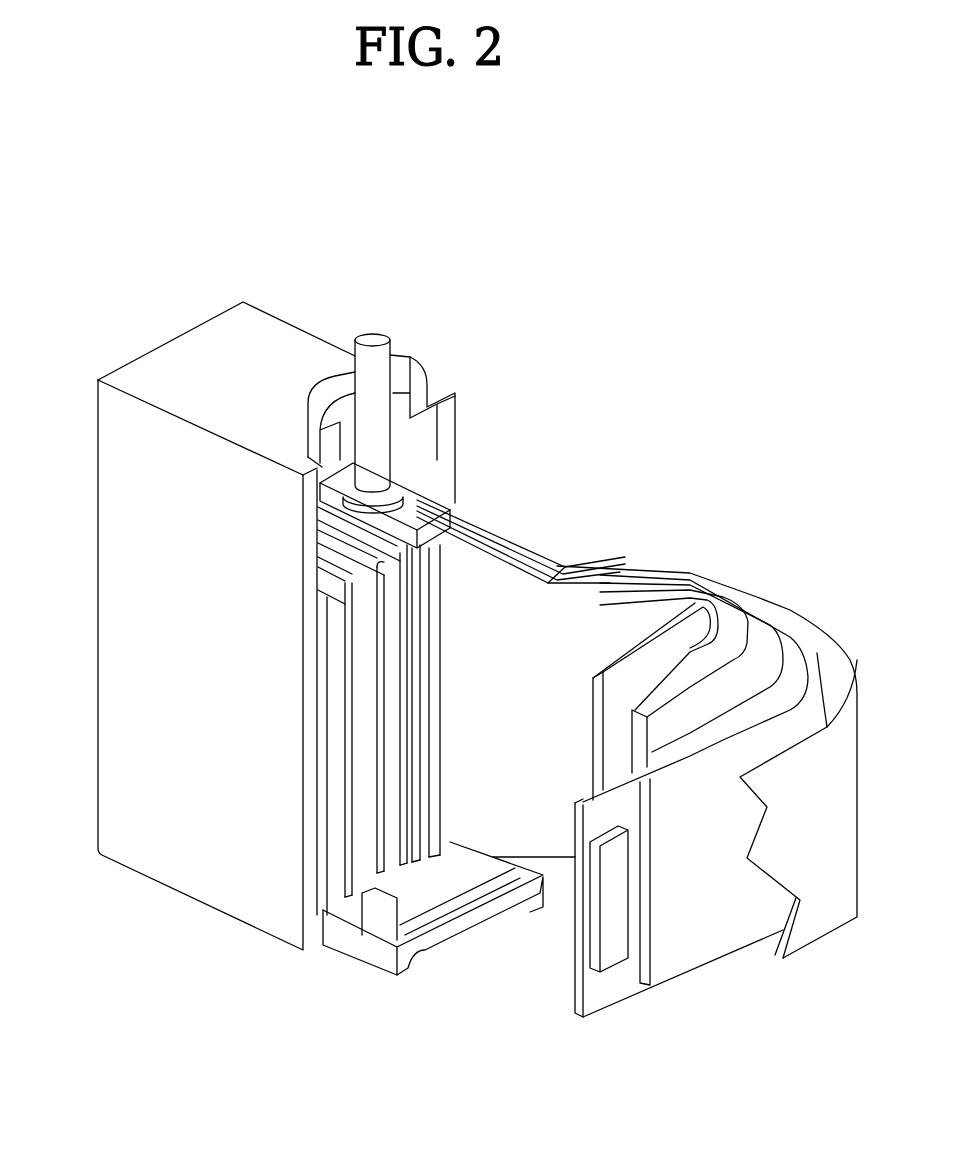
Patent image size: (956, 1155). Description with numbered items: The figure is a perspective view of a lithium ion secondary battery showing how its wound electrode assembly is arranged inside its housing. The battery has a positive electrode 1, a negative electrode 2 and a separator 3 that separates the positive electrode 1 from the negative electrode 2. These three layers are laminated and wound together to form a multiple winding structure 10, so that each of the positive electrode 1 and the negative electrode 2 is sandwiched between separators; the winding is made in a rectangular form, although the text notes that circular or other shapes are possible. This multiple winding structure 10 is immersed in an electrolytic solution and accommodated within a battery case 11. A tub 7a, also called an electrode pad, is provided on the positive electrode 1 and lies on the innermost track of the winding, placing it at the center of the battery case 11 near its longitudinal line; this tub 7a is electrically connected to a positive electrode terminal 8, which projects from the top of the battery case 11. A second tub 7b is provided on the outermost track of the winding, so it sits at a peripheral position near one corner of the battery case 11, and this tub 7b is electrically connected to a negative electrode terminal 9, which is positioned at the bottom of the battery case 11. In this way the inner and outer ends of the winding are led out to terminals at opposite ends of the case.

The positive electrode 1 is at (787, 610).
The negative electrode 2 is at (830, 640).
The separator 3 is at (772, 625).
The tub 7a is at (440, 532).
The tub 7b is at (617, 932).
The positive electrode terminal 8 is at (385, 367).
The negative electrode terminal 9 is at (430, 940).
The multiple winding structure 10 is at (552, 520).
The battery case 11 is at (160, 840).